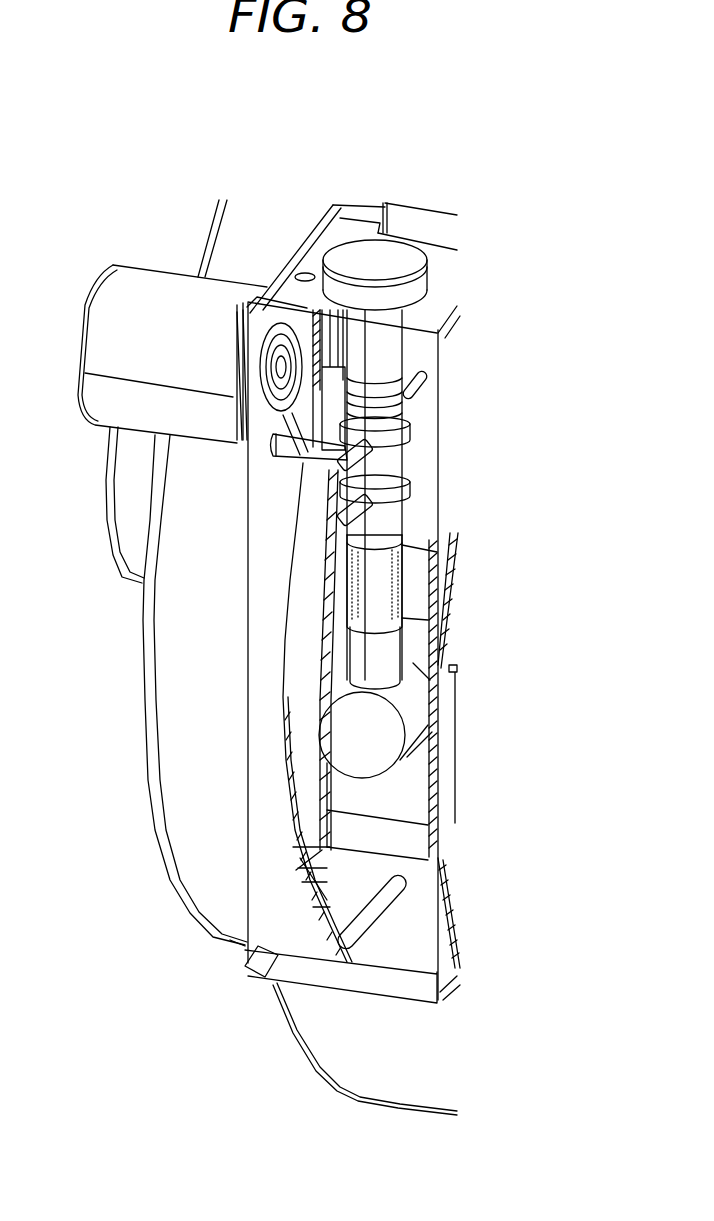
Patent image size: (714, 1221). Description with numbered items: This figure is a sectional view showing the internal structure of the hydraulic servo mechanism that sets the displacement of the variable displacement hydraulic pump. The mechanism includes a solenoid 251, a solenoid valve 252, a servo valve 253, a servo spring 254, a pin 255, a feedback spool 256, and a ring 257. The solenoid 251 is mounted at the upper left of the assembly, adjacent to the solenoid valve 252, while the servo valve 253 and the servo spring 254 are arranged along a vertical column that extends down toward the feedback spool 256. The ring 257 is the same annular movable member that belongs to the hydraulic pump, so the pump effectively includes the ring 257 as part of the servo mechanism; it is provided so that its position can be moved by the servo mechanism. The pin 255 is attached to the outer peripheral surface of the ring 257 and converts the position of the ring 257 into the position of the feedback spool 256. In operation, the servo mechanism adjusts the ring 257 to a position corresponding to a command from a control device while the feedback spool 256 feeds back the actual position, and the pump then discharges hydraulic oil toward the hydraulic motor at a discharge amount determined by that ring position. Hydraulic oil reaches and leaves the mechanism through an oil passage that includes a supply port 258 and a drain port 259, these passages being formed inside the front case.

The solenoid 251 is at (148, 278).
The solenoid valve 252 is at (293, 440).
The servo valve 253 is at (403, 438).
The servo spring 254 is at (403, 570).
The pin 255 is at (413, 707).
The feedback spool 256 is at (395, 668).
The ring 257 is at (413, 788).
The supply port 258 is at (317, 322).
The drain port 259 is at (300, 328).